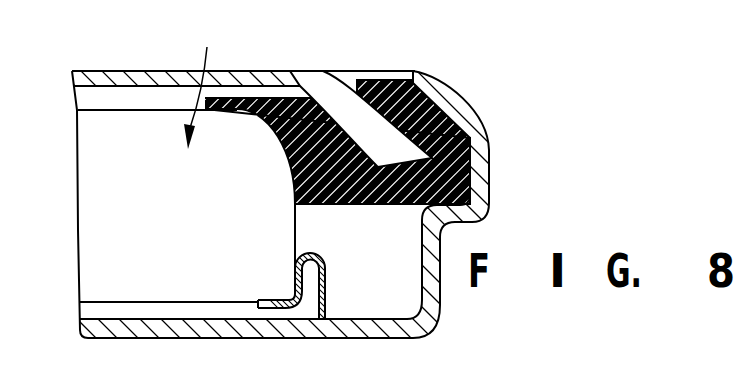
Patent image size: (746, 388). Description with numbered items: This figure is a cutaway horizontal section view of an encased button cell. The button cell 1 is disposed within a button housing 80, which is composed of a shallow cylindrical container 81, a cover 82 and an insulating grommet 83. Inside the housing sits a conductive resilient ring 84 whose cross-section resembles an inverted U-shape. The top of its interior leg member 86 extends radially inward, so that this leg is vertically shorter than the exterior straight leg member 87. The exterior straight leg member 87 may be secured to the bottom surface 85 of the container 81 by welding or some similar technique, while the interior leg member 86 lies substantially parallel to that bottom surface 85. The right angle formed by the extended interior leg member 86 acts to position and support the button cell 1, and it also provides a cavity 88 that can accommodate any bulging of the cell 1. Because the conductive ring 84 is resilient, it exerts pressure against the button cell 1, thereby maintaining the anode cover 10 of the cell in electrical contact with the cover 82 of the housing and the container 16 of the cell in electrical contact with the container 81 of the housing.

The button cell 1 is at (199, 92).
The anode cover 10 is at (129, 90).
The container 16 is at (93, 250).
The button housing 80 is at (486, 204).
The shallow cylindrical container 81 is at (432, 292).
The cover 82 is at (275, 72).
The insulating grommet 83 is at (470, 155).
The conductive resilient ring 84 is at (322, 266).
The bottom surface 85 is at (305, 311).
The interior leg member 86 is at (280, 307).
The exterior straight leg member 87 is at (327, 300).
The cavity 88 is at (145, 316).